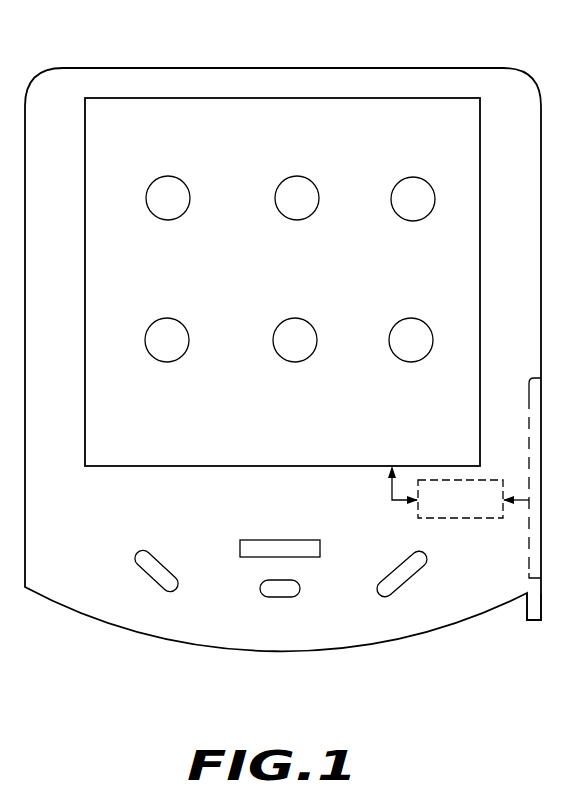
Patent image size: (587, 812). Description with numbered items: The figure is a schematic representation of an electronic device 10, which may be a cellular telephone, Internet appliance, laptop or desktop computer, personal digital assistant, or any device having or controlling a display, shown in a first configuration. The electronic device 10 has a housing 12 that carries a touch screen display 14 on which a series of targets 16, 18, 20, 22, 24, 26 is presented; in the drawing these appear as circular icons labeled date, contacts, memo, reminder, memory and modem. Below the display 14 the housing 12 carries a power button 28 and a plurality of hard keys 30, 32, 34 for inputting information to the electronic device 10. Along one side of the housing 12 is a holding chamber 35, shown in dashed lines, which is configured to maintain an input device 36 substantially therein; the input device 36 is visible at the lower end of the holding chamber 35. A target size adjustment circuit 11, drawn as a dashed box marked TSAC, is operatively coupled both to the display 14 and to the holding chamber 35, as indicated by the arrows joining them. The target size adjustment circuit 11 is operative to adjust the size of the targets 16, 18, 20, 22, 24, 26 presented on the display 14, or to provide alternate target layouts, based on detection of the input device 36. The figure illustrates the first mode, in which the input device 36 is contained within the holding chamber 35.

The electronic device 10 is at (115, 50).
The target size adjustment circuit 11 is at (452, 518).
The housing 12 is at (416, 68).
The touch screen display 14 is at (175, 466).
The target 16 is at (181, 178).
The target 18 is at (312, 181).
The target 20 is at (428, 181).
The target 22 is at (180, 321).
The target 24 is at (308, 321).
The target 26 is at (424, 321).
The power button 28 is at (293, 594).
The hard key 30 is at (131, 548).
The hard key 32 is at (278, 540).
The hard key 34 is at (410, 579).
The holding chamber 35 is at (528, 393).
The input device 36 is at (532, 620).